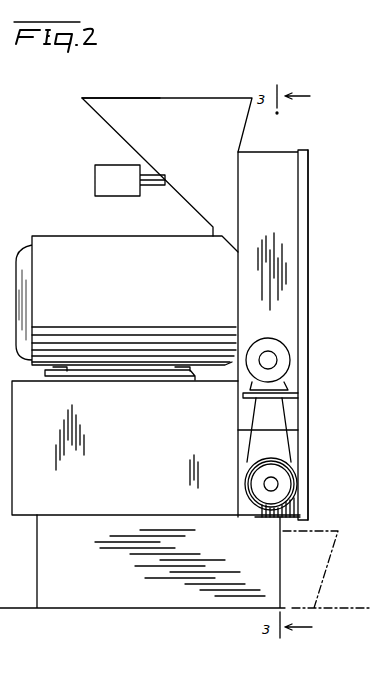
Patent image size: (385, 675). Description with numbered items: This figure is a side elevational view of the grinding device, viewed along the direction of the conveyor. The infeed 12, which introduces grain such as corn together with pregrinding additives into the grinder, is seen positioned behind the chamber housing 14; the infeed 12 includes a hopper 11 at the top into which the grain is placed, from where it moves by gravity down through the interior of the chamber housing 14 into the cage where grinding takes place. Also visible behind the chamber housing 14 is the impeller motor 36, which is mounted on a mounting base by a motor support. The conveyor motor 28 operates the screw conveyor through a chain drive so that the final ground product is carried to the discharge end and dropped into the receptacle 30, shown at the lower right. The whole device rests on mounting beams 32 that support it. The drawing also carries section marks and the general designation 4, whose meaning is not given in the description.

The screening machine 4 is at (346, 335).
The hopper 11 is at (163, 98).
The hopper top edge 12 is at (144, 93).
The frame column 14 is at (280, 190).
The drive pulley 28 is at (290, 356).
The support member 30 is at (320, 580).
The base 32 is at (78, 593).
The motor 36 is at (110, 232).